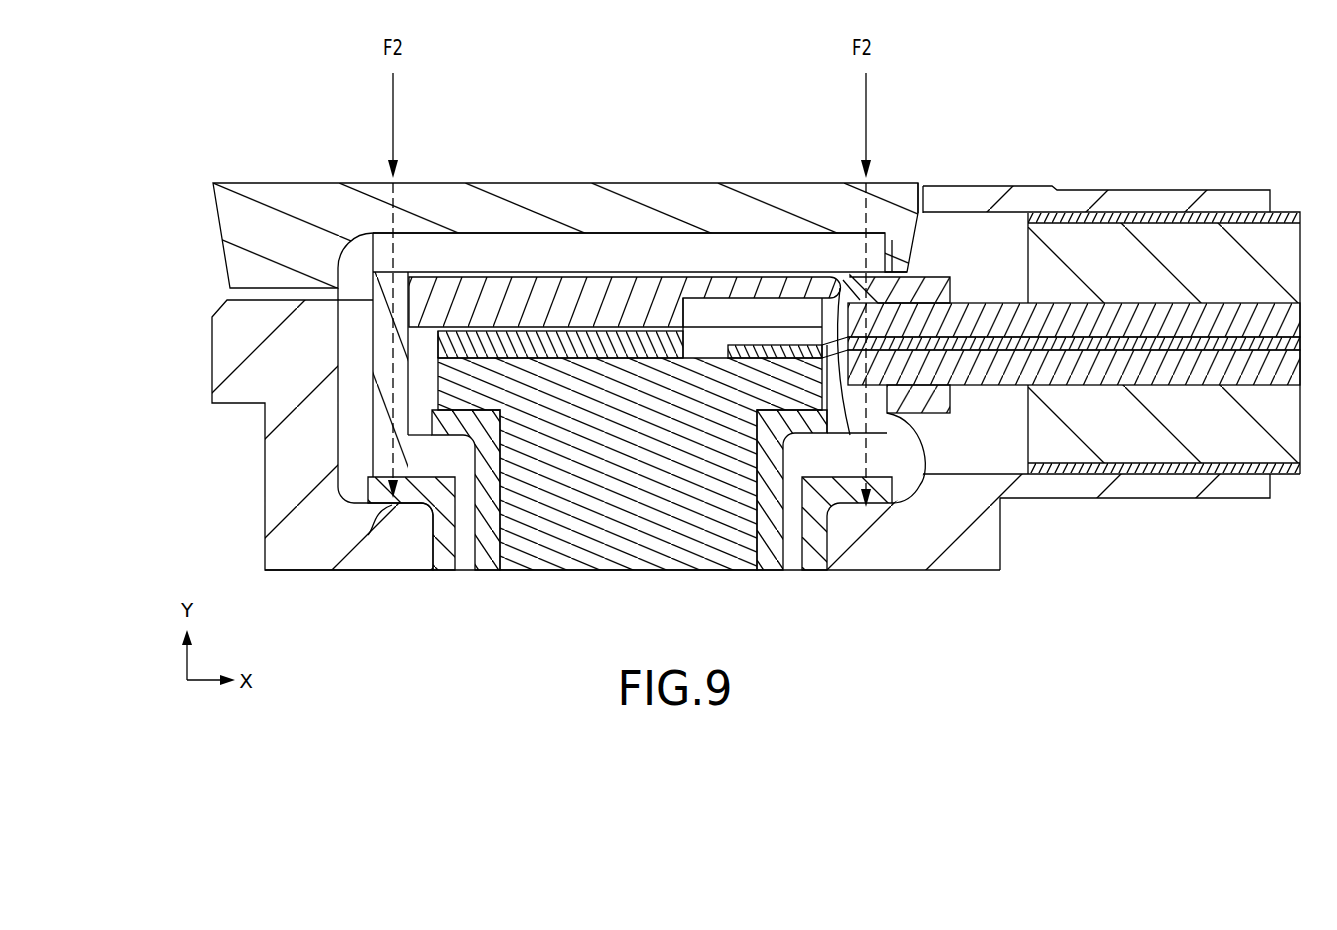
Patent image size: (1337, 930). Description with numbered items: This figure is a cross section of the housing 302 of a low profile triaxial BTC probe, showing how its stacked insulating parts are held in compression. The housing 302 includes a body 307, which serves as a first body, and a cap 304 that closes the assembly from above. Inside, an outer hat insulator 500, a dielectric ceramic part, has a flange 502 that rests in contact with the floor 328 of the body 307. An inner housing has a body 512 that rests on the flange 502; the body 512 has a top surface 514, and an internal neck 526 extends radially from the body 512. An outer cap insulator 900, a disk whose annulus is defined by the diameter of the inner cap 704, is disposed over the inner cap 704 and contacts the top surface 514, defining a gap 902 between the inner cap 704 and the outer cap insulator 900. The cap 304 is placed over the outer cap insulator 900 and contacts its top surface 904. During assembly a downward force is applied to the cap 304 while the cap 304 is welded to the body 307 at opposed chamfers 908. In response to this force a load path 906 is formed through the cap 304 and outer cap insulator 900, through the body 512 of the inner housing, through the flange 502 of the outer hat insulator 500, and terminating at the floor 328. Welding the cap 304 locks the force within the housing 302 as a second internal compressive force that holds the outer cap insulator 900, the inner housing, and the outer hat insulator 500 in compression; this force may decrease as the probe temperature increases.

The housing 302 is at (1012, 155).
The cap 304 is at (271, 238).
The body 307 is at (208, 360).
The floor 328 is at (371, 533).
The outer hat insulator 500 is at (840, 535).
The flange 502 is at (423, 490).
The body 512 is at (380, 392).
The top surface 514 is at (402, 270).
The internal neck 526 is at (928, 395).
The inner cap 704 is at (616, 311).
The outer cap insulator 900 is at (573, 265).
The gap 902 is at (542, 277).
The top surface 904 is at (675, 228).
The load path 906 is at (390, 333).
The opposed chamfers 908 is at (222, 293).